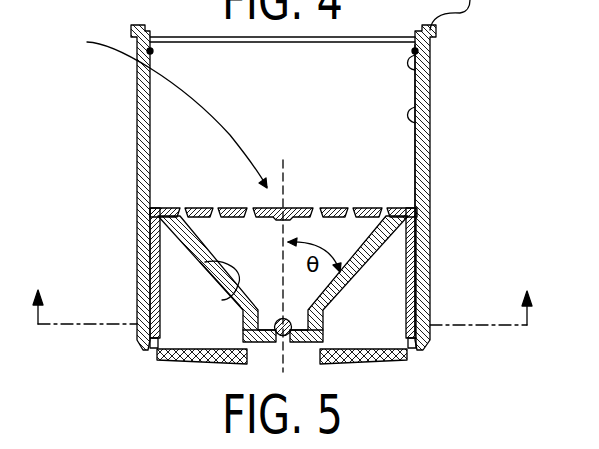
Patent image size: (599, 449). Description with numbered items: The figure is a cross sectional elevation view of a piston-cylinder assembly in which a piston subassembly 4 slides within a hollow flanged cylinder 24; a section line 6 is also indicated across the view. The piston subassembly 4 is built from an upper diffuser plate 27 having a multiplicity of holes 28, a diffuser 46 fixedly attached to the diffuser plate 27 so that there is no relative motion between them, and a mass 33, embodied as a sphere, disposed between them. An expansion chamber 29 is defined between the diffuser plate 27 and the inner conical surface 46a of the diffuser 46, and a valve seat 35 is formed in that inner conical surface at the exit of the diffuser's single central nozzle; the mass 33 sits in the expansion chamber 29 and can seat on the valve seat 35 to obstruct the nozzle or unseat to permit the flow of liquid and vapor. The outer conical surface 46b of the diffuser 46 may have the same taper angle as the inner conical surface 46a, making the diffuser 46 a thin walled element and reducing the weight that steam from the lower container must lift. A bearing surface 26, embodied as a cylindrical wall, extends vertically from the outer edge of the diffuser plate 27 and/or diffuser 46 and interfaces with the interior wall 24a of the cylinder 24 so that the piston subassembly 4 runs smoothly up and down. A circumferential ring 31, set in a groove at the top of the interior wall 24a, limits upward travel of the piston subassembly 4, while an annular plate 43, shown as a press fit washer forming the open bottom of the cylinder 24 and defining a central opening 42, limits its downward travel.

The piston subassembly 4 is at (170, 109).
The section line 6- 6 is at (282, 288).
The hollow flanged cylinder 24 is at (430, 185).
The interior wall 24a is at (430, 125).
The bearing surface 26 is at (137, 210).
The upper diffuser plate 27 is at (200, 208).
The holes 28 is at (253, 210).
The expansion chamber 29 is at (405, 213).
The circumferential ring 31 is at (430, 70).
The mass 33 is at (345, 292).
The valve seat 35 is at (323, 318).
The central opening 42 is at (270, 355).
The annular plate 43 is at (387, 363).
The diffuser 46 is at (176, 256).
The inner conical surface 46a is at (222, 275).
The outer conical surface 46b is at (227, 270).